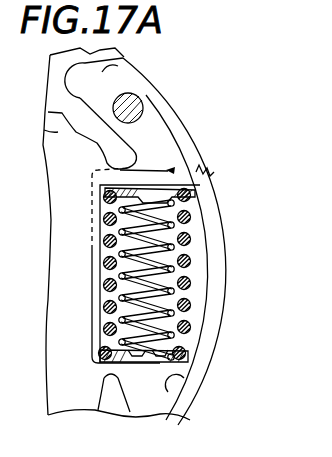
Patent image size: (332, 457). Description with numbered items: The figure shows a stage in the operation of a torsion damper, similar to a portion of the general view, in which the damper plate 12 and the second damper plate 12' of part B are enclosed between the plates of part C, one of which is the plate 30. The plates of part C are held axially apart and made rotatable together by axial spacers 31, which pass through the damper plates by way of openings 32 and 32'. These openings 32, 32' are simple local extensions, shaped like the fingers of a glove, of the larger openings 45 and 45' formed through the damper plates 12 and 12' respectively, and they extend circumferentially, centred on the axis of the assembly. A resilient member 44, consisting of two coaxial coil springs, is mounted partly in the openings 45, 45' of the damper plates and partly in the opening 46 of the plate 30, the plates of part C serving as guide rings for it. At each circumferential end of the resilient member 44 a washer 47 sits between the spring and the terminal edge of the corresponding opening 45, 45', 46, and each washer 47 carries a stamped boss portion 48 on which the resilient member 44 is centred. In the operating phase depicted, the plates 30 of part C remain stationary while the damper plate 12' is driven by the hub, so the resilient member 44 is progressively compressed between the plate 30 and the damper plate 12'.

The damper plate 12 is at (116, 234).
The second damper plate 12' is at (63, 150).
The plate 30 is at (150, 118).
The axial spacer 31 is at (146, 92).
The opening 32 is at (145, 235).
The opening 32' is at (201, 394).
The resilient member 44 is at (197, 233).
The opening 45 is at (199, 280).
The opening 45' is at (76, 344).
The opening 46 is at (200, 170).
The washer 47 is at (207, 194).
The boss portion 48 is at (104, 222).